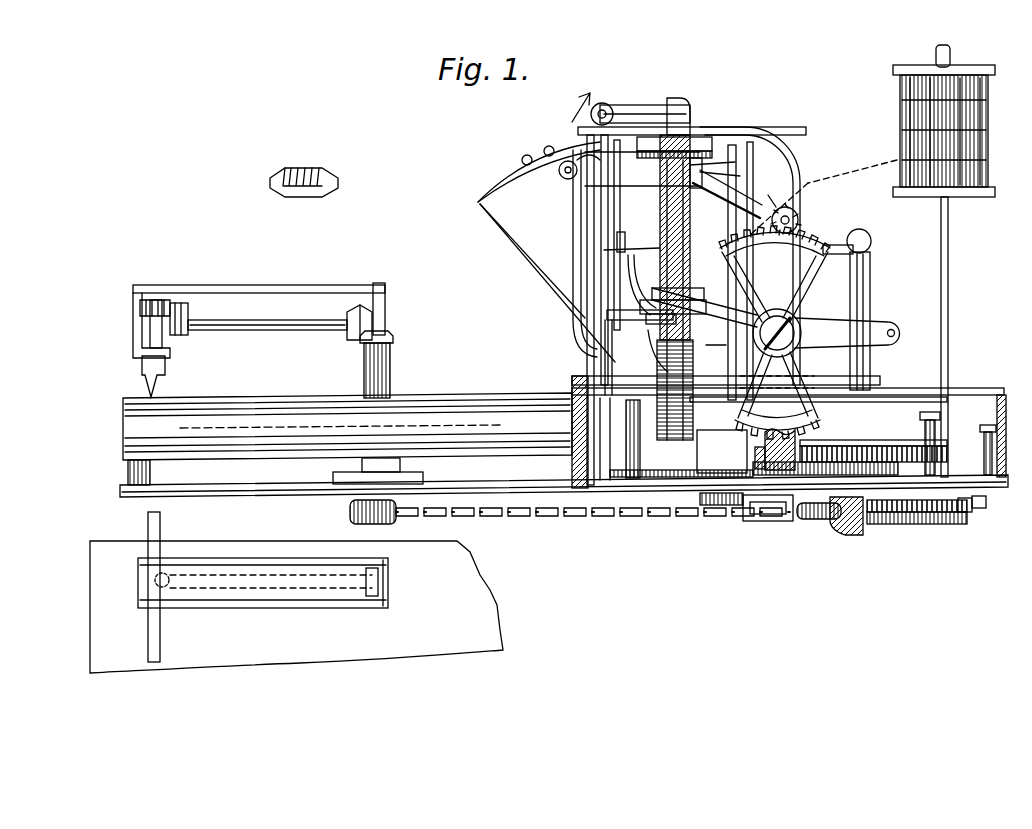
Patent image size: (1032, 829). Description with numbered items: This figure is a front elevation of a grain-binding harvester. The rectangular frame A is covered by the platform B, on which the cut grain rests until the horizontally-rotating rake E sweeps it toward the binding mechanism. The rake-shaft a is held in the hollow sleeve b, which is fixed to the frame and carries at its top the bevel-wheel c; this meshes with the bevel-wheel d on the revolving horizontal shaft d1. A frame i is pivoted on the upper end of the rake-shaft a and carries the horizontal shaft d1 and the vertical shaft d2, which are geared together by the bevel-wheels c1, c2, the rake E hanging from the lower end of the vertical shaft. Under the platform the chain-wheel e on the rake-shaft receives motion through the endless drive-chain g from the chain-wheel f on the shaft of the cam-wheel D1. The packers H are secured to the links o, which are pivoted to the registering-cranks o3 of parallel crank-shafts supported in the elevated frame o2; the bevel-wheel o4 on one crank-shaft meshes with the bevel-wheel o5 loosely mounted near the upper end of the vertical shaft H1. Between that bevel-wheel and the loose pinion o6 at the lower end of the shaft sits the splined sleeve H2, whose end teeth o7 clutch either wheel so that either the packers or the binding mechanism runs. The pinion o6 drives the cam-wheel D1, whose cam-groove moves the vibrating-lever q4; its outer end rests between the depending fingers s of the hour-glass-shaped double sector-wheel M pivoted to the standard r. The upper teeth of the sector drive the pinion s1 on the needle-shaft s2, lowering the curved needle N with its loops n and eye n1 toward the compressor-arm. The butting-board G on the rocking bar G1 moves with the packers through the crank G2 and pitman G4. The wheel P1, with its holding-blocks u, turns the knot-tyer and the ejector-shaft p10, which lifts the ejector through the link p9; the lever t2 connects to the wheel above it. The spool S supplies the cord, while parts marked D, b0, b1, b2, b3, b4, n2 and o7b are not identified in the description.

The spool of wire S is at (872, 261).
The links o is at (645, 104).
The registering-cranks o3 is at (604, 103).
The bevel-wheel o5 is at (702, 140).
The bevel-wheel o4 is at (720, 169).
The frame o2 is at (714, 170).
The screw shaft b3 is at (660, 318).
The hollow sleeve b is at (692, 290).
The collar b4 is at (680, 318).
The lever arm b1 is at (810, 320).
The pitman G4 is at (590, 200).
The crank G2 is at (604, 248).
The packers H is at (572, 270).
The bracket b2 is at (660, 382).
The loops n is at (545, 155).
The eye n1 is at (536, 274).
The needle N is at (522, 176).
The vertical shaft H1 is at (727, 271).
The sleeve H2 is at (716, 353).
The teeth o7 is at (720, 185).
The needle-shaft s2 is at (800, 218).
The pinion s1 is at (765, 193).
The standard r is at (774, 332).
The double sector-wheel M is at (820, 252).
The rocking bar G1 is at (868, 234).
The butting-board G is at (858, 312).
The platform B is at (978, 382).
The cylinder D is at (347, 426).
The frame A is at (564, 550).
The chain-wheel e is at (380, 522).
The endless drive-chain g is at (600, 519).
The cam-wheel D1 is at (850, 462).
The loose pinion o6 is at (636, 470).
The block n2 is at (722, 451).
The depending fingers s is at (773, 449).
The slide o7b is at (706, 448).
The chain-wheel f is at (820, 520).
The vibrating-lever q4 is at (752, 522).
The wheel P1 is at (888, 524).
The holding-blocks u is at (960, 521).
The lever t2 is at (978, 510).
The link p9 is at (915, 443).
The ejector-shaft p10 is at (984, 436).
The bevel-wheel c is at (302, 196).
The frame i is at (260, 448).
The horizontal shaft d1 is at (298, 331).
The vertical shaft d2 is at (148, 322).
The bevel-wheel c2 is at (166, 300).
The bevel-wheel c1 is at (188, 319).
The bevel-wheel d is at (355, 341).
The rake-shaft a is at (385, 316).
The post b0 is at (390, 385).
The rake E is at (166, 368).